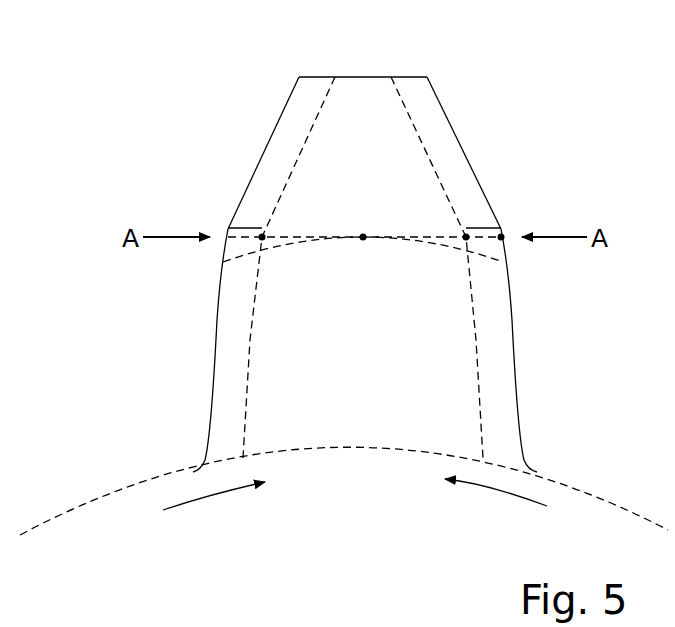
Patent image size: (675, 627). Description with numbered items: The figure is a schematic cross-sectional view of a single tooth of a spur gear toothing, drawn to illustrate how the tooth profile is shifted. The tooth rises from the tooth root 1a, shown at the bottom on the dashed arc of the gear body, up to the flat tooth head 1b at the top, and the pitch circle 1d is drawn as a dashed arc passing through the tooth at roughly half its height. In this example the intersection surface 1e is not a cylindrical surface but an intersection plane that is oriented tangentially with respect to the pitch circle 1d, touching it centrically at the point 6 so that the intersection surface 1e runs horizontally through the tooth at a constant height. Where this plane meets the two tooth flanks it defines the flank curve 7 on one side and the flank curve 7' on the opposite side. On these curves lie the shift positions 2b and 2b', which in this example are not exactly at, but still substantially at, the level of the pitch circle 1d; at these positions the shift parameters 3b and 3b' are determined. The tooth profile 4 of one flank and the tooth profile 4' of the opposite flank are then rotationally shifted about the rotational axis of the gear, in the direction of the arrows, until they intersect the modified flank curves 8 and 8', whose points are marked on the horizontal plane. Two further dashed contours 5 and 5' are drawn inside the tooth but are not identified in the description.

The tooth root 1a is at (197, 470).
The tooth head 1b is at (377, 77).
The pitch circle 1d is at (485, 257).
The intersection surface 1e is at (327, 237).
The shift position 2b is at (194, 274).
The shift position 2b' is at (544, 274).
The shift parameter 3b is at (234, 183).
The shift parameter 3b' is at (502, 181).
The tooth profile 4 is at (174, 396).
The tooth profile 4' is at (561, 396).
The inner tooth contour (left) 5 is at (251, 267).
The inner tooth contour (right) 5' is at (481, 267).
The point 6 is at (363, 237).
The flank curve 7 is at (228, 153).
The flank curve 7' is at (503, 153).
The modified flank curve 8 is at (289, 272).
The modified tooth flank curve 8' is at (456, 272).